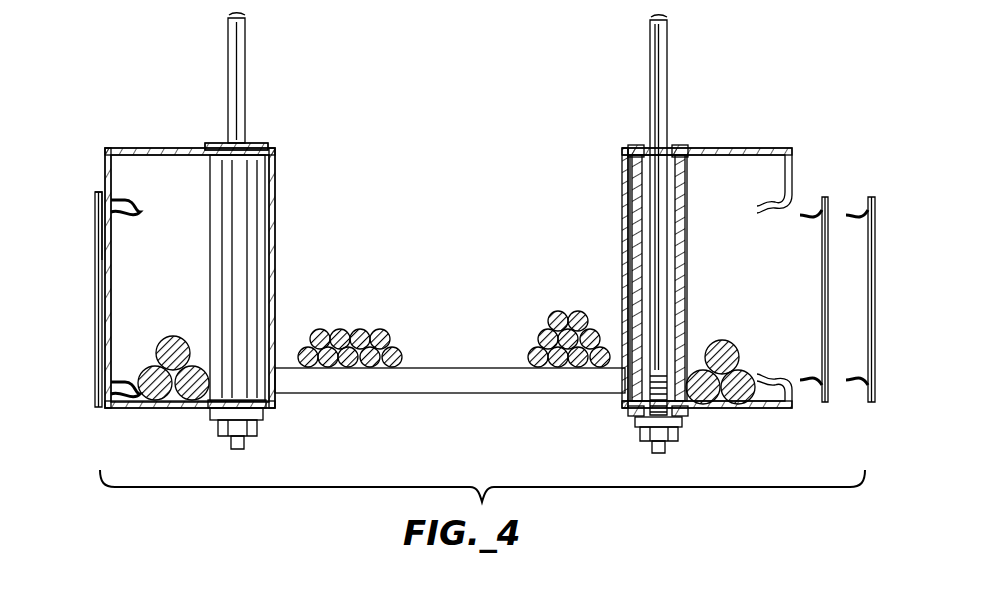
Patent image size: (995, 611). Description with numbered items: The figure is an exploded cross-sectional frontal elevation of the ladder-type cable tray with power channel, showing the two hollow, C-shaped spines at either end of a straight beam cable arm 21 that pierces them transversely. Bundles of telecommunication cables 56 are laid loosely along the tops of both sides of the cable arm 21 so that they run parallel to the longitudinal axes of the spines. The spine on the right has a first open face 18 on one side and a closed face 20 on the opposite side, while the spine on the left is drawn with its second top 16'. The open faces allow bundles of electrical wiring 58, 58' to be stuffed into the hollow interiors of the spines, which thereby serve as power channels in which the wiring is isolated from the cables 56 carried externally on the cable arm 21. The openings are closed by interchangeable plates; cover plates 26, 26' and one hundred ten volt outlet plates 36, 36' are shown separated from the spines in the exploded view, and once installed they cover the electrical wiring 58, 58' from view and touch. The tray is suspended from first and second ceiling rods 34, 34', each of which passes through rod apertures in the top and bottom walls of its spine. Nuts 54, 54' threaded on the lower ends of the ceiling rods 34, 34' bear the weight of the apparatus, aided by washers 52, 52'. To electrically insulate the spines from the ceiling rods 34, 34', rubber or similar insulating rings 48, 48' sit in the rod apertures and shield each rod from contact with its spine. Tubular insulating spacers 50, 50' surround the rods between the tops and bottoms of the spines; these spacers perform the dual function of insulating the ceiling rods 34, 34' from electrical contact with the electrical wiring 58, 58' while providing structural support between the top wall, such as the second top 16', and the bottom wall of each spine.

The second top 16' is at (190, 261).
The first open face 18 is at (793, 178).
The closed face 20 is at (622, 282).
The cable arm 21 is at (452, 375).
The cover plate 26 is at (788, 299).
The cover plate 26' is at (73, 299).
The first ceiling rod 34 is at (695, 215).
The second ceiling rod 34' is at (196, 78).
The 110 V outlet plate 36 is at (848, 325).
The 110 V outlet plate 36' is at (73, 213).
The insulating ring 48 is at (687, 270).
The insulating ring 48' is at (275, 297).
The tubular insulating spacer 50 is at (620, 278).
The tubular insulating spacer 50' is at (268, 278).
The washer 52 is at (627, 433).
The washer 52' is at (206, 429).
The nut 54 is at (715, 448).
The nut 54' is at (269, 453).
The bundles of cables 56 is at (368, 330).
The electrical wiring 58 is at (738, 353).
The electrical wiring 58' is at (164, 349).